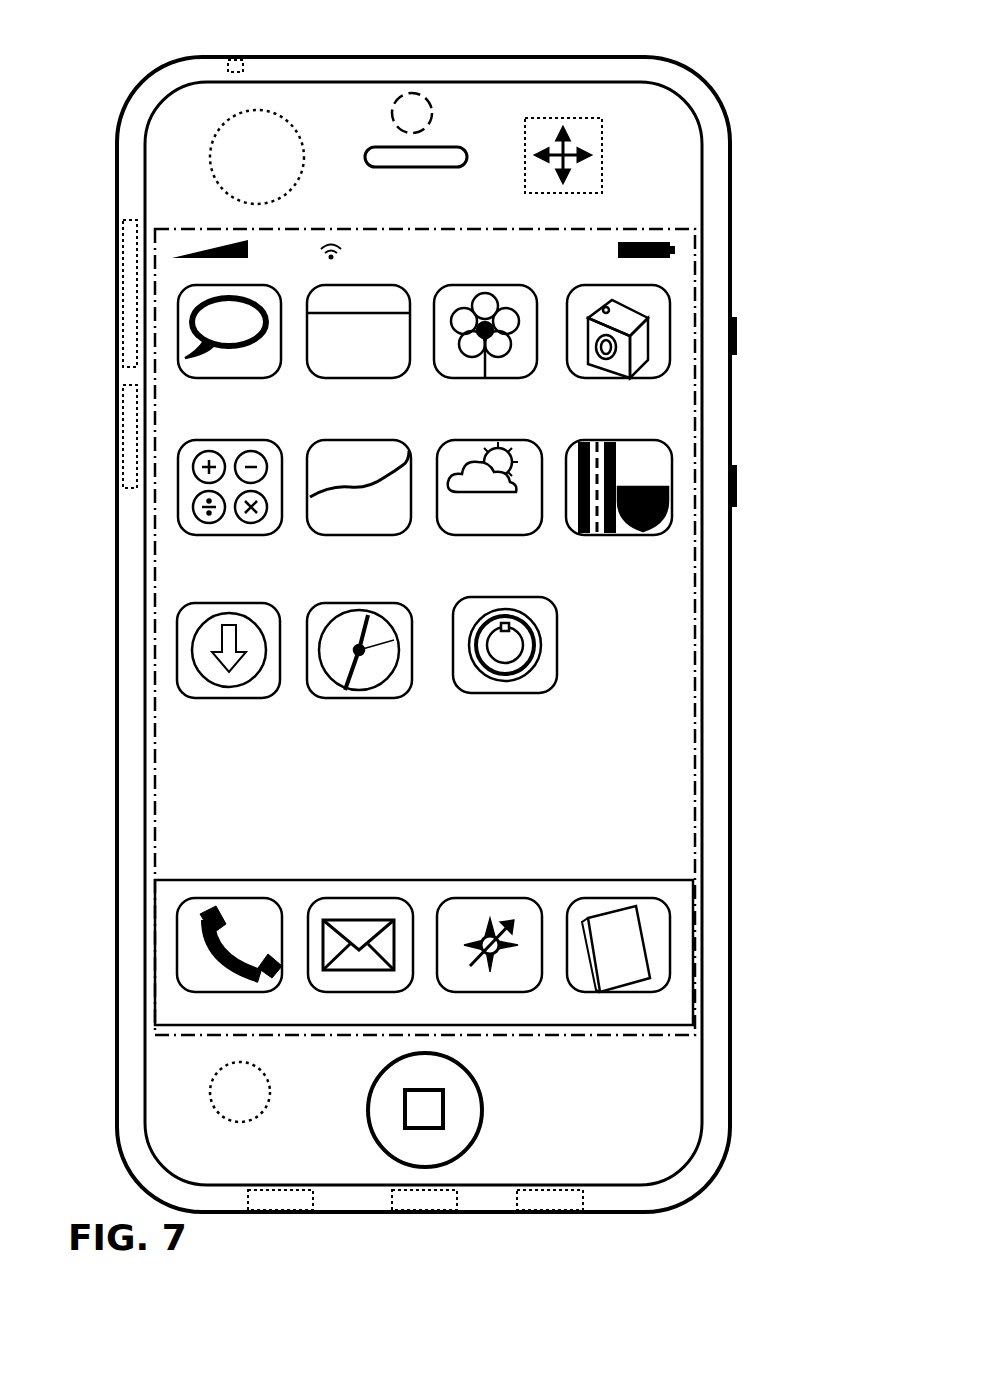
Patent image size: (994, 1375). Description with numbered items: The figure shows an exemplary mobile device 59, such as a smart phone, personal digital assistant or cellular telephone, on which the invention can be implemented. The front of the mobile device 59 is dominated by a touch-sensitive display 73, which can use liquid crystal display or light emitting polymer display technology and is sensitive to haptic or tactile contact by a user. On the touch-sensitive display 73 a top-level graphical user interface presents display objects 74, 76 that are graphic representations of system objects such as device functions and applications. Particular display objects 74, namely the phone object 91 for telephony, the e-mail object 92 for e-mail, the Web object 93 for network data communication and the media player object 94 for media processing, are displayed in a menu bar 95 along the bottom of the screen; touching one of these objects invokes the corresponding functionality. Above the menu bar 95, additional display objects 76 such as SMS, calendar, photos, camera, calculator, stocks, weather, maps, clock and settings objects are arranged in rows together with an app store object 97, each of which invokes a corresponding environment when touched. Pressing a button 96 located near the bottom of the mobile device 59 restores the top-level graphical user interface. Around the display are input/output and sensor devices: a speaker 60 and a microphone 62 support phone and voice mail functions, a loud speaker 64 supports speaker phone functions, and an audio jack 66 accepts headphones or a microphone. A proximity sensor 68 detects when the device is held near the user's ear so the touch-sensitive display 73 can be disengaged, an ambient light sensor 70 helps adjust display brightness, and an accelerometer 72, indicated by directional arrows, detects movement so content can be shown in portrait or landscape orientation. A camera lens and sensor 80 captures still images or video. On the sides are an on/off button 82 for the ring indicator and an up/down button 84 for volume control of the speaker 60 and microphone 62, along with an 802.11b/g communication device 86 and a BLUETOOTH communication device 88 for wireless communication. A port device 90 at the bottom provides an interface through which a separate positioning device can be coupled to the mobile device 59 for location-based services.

The mobile device 59 is at (502, 57).
The speaker 60 is at (420, 168).
The microphone 62 is at (284, 1210).
The loud speaker 64 is at (546, 1210).
The audio jack 66 is at (236, 58).
The proximity sensor 68 is at (222, 171).
The ambient light sensor 70 is at (244, 1120).
The accelerometer 72 is at (602, 160).
The touch-sensitive display 73 is at (620, 229).
The display objects 74 is at (479, 922).
The display objects 76 is at (485, 554).
The camera lens and sensor 80 is at (432, 117).
The on/off button 82 is at (738, 336).
The up/down button 84 is at (738, 484).
The 802.11b/g communication device 86 is at (122, 272).
The BLUETOOTH communication device 88 is at (122, 434).
The port device 90 is at (424, 1210).
The phone object 91 is at (230, 898).
The e-mail object 92 is at (360, 898).
The Web object 93 is at (487, 898).
The media player object 94 is at (617, 898).
The menu bar 95 is at (588, 1035).
The button 96 is at (482, 1108).
The app store object 97 is at (230, 603).